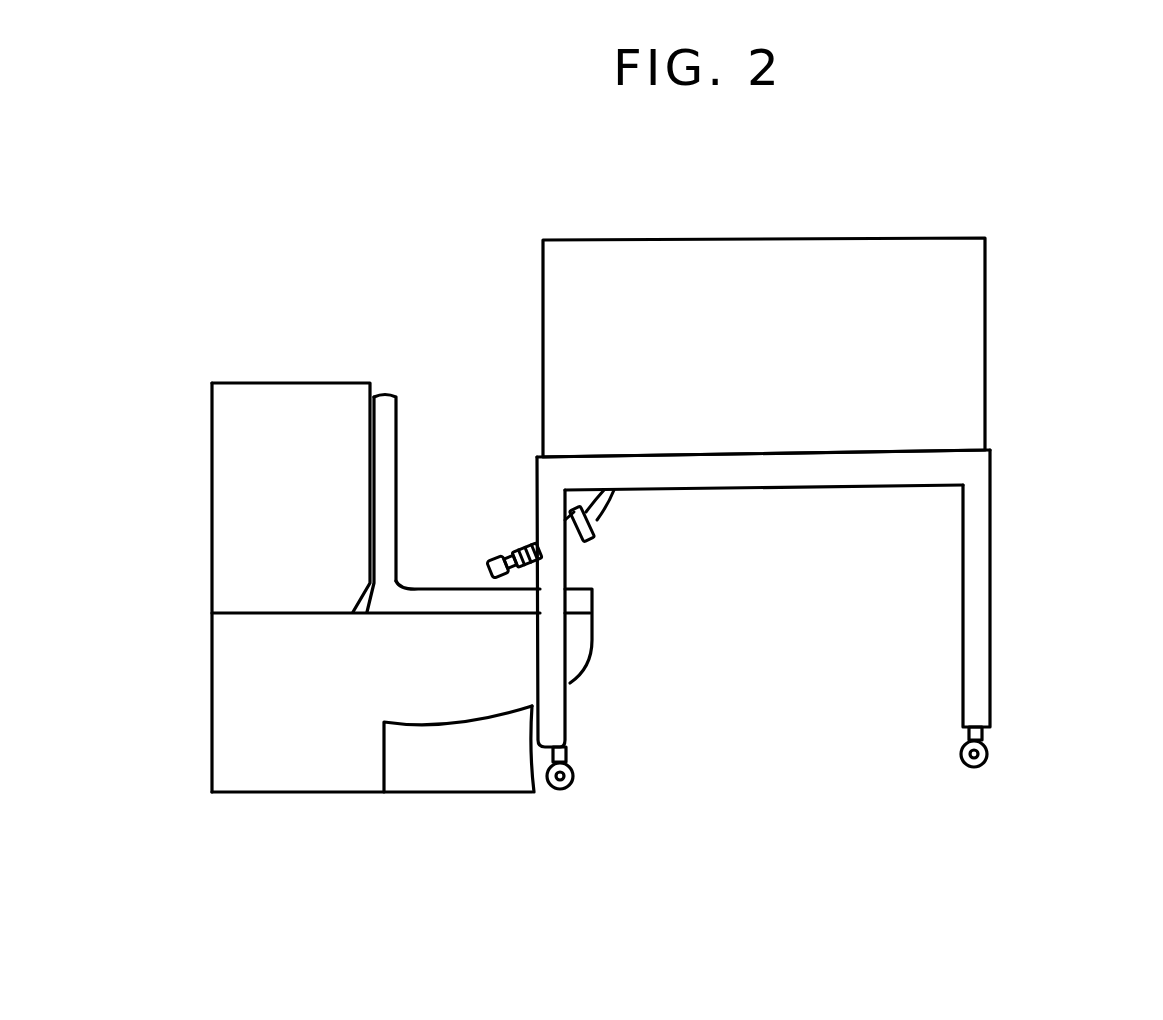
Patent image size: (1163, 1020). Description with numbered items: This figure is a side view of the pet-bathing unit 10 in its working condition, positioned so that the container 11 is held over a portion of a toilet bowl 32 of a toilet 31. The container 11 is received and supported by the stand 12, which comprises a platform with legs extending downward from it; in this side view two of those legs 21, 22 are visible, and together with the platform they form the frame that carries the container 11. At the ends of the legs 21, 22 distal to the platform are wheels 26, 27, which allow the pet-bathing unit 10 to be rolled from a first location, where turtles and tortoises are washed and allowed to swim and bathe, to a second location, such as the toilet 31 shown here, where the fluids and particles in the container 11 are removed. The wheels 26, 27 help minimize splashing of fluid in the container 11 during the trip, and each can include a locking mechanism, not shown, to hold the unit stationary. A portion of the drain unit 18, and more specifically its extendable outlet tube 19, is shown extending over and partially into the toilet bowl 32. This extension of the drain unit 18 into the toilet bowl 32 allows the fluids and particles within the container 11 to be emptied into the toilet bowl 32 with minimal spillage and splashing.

The pet-bathing unit 10 is at (798, 451).
The container 11 is at (987, 323).
The stand 12 is at (831, 616).
The drain unit 18 is at (612, 532).
The extendable outlet tube 19 is at (518, 540).
The leg 21 is at (988, 628).
The leg 22 is at (557, 686).
The wheel 26 is at (988, 752).
The wheel 27 is at (575, 775).
The toilet 31 is at (333, 322).
The toilet bowl 32 is at (470, 660).